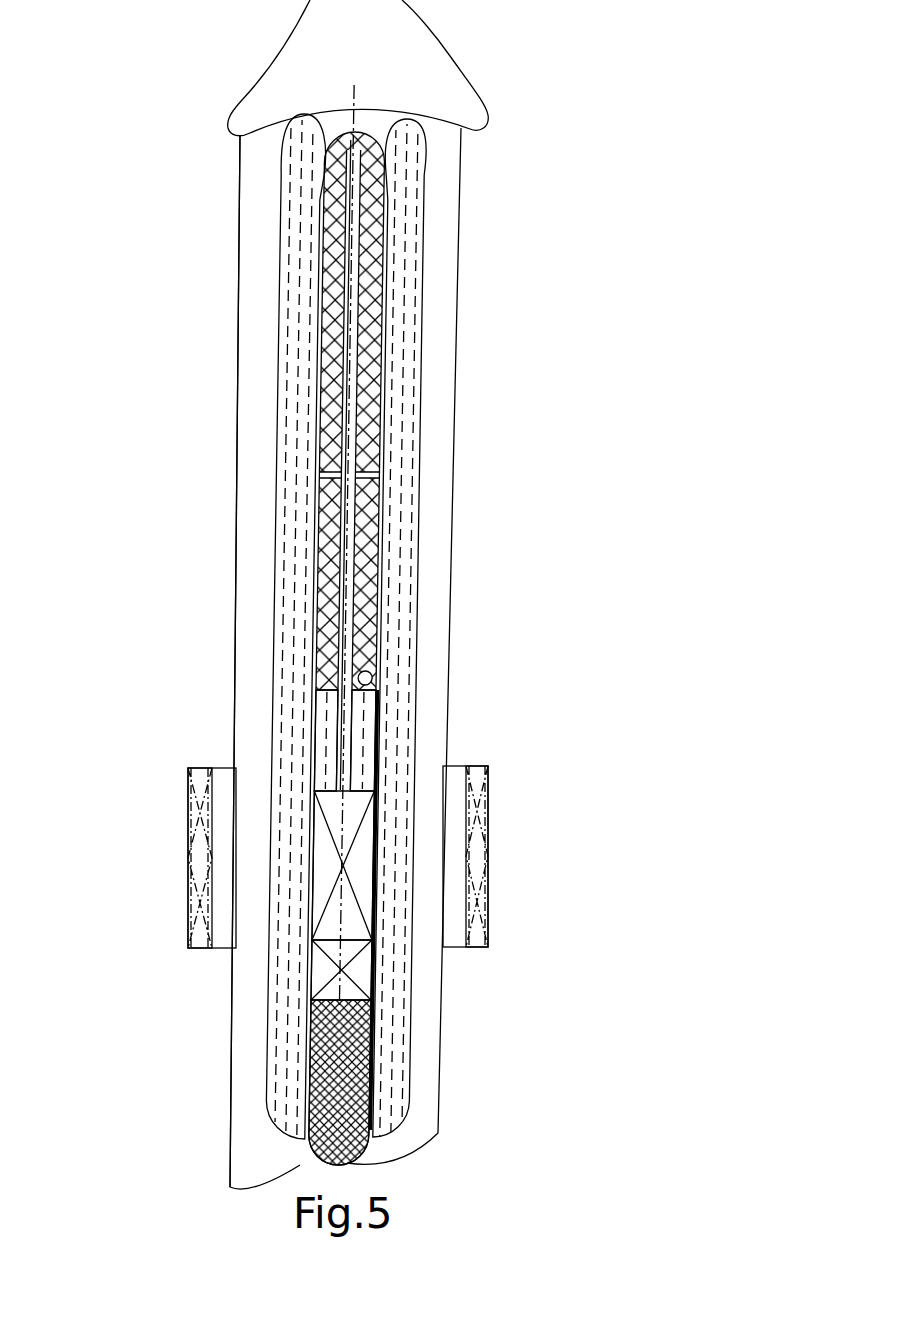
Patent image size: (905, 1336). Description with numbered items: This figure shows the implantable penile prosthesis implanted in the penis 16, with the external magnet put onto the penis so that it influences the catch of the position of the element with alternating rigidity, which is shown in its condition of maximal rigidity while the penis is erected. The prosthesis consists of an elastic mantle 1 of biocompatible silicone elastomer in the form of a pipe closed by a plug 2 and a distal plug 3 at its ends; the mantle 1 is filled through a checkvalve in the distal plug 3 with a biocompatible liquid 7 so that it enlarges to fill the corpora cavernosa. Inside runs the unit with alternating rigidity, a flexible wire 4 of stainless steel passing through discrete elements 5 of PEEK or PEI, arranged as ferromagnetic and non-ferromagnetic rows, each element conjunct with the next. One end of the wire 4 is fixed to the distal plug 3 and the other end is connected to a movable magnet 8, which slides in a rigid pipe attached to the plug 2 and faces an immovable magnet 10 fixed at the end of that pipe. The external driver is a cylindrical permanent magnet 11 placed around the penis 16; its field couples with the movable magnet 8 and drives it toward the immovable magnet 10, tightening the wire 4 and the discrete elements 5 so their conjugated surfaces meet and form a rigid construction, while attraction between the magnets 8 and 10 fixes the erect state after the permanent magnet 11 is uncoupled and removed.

The elastic mantle 1 is at (420, 440).
The plug 2 is at (297, 1102).
The distal plug 3 is at (380, 198).
The flexible wire 4 is at (350, 290).
The discrete elements 5 is at (382, 316).
The biocompatible liquid 7 is at (300, 350).
The movable magnet 8 is at (357, 870).
The immovable magnet 10 is at (353, 965).
The permanent magnet 11 is at (207, 827).
The penis 16 is at (257, 447).